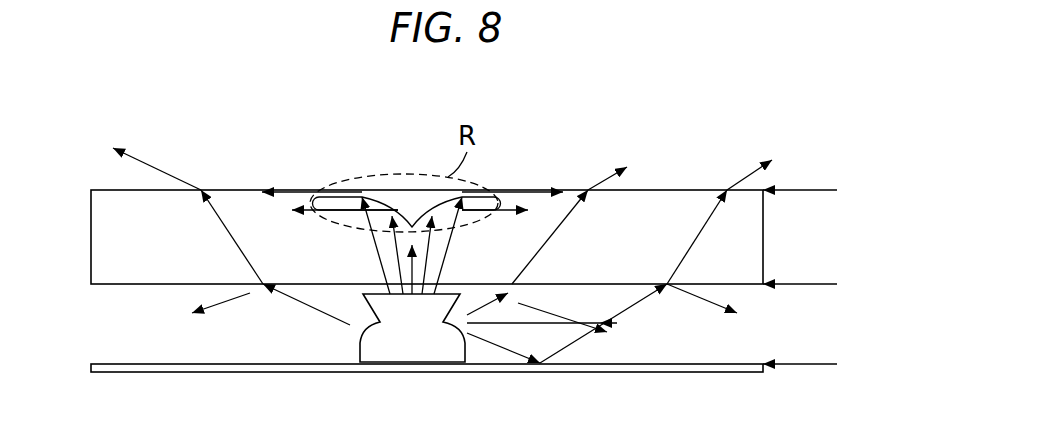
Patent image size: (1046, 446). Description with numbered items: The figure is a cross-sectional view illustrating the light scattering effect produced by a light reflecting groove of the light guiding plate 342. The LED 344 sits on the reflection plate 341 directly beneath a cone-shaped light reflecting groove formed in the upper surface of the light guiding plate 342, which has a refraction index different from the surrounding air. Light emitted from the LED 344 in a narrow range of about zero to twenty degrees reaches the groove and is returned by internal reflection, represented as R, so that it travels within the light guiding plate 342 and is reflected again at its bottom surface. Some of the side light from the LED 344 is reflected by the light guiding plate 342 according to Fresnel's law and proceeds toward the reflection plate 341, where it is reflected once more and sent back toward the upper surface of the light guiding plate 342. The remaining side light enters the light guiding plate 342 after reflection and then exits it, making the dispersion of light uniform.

The light guiding plate 342 is at (748, 238).
The reflection plate 341 is at (603, 367).
The LED 344 is at (410, 347).